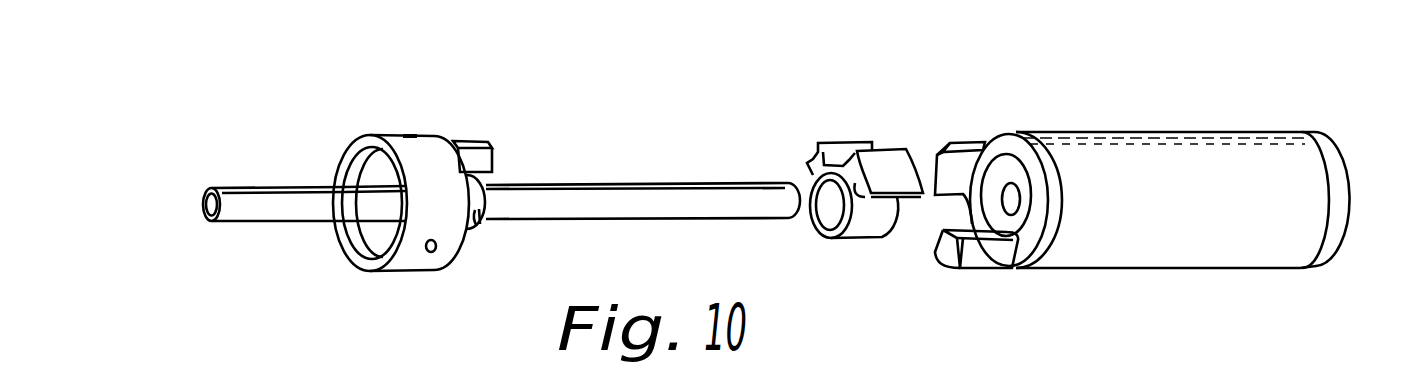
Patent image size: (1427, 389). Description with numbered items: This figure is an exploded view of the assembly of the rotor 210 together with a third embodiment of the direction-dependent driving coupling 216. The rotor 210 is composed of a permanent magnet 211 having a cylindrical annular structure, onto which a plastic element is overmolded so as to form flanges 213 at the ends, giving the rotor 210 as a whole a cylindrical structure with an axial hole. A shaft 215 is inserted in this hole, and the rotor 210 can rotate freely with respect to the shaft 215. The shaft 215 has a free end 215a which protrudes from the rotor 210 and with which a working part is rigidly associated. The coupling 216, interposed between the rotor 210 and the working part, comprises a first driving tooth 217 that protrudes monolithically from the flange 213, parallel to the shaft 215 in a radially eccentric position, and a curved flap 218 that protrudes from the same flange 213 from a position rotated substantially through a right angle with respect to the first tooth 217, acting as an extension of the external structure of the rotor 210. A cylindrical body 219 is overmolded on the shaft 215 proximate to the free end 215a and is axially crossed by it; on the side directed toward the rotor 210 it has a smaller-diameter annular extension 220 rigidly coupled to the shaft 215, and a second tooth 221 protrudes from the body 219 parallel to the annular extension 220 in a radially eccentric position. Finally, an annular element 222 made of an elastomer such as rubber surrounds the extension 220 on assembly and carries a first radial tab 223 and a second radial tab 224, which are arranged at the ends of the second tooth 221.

The rotor 210 is at (1178, 196).
The permanent magnet 211 is at (1153, 170).
The flange 213 is at (1018, 172).
The shaft 215 is at (607, 213).
The free end 215a is at (283, 205).
The direction-dependent driving coupling 216 is at (880, 100).
The first driving tooth 217 is at (972, 262).
The curved flap 218 is at (963, 162).
The body 219 is at (414, 128).
The annular extension 220 is at (475, 215).
The second tooth 221 is at (497, 107).
The annular element 222 is at (834, 231).
The first radial tab 223 is at (812, 157).
The second radial tab 224 is at (923, 133).